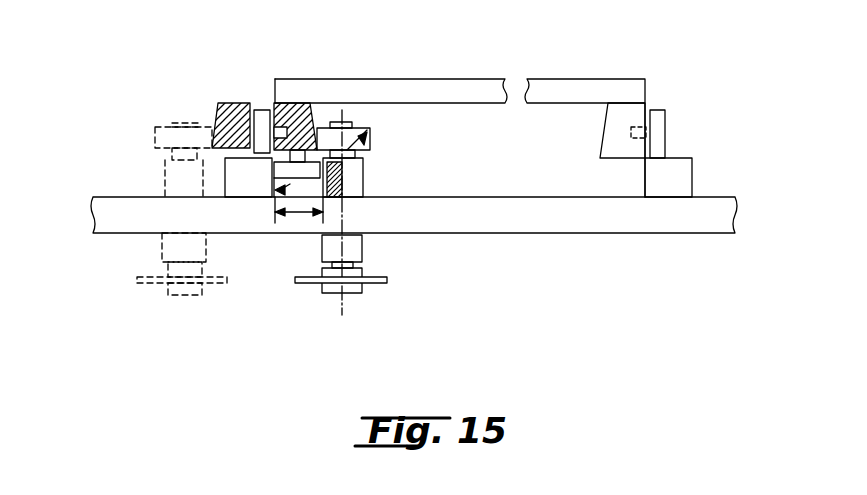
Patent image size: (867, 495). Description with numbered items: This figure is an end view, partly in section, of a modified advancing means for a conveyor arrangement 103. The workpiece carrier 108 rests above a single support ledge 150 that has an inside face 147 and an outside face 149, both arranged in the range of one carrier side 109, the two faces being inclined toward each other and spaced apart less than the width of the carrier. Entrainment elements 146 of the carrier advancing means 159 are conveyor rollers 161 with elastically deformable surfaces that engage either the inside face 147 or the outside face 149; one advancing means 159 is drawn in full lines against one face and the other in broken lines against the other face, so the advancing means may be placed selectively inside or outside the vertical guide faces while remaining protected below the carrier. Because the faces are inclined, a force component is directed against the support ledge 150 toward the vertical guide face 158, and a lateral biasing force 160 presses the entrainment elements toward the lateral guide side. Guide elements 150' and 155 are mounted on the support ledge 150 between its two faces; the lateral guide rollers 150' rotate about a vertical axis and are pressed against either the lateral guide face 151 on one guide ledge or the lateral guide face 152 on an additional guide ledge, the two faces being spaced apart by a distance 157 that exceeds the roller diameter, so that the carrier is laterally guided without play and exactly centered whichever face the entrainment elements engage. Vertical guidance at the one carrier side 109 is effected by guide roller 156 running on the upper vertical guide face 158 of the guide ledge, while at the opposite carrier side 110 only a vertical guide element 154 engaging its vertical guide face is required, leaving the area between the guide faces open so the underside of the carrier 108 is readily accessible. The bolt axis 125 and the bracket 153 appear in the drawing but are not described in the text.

The conveyor arrangement 103 is at (220, 75).
The workpiece carrier 108 is at (405, 85).
The carrier side 109 is at (272, 55).
The opposite carrier side 110 is at (581, 65).
The bolt axis 125 is at (347, 311).
The entrainment elements 146 is at (158, 128).
The inside face 147 is at (303, 123).
The outside face 149 is at (208, 113).
The support ledge 150 is at (257, 105).
The lateral guide rollers 150' is at (359, 233).
The lateral guide face 151 is at (292, 180).
The lateral guide face 152 is at (316, 200).
The bracket 153 is at (652, 145).
The vertical guide element 154 is at (668, 158).
The guide element 155 is at (240, 160).
The guide roller 156 is at (263, 156).
The distance 157 is at (310, 178).
The vertical guide face 158 is at (232, 156).
The advancing means 159 is at (380, 182).
The lateral biasing force 160 is at (356, 150).
The conveyor rollers 161 is at (368, 128).